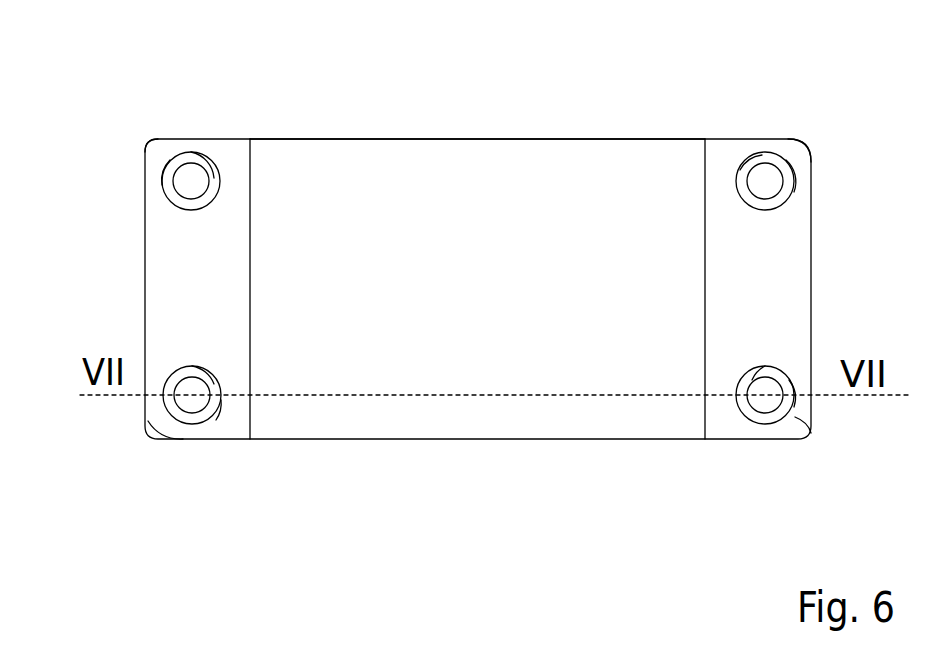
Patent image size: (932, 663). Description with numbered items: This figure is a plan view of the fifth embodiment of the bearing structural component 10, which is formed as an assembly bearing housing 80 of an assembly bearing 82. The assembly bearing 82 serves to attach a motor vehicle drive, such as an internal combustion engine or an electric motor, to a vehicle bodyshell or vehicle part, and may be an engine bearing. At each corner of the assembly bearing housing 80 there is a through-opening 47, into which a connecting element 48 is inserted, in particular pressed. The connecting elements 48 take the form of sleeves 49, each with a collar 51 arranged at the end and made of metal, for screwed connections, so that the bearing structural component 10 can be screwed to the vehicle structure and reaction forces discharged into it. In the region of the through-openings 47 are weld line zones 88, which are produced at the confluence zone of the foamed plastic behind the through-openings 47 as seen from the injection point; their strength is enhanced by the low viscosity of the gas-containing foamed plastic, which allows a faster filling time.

The bearing structural component 10 is at (373, 108).
The assembly bearing housing 80 is at (475, 113).
The assembly bearing 82 is at (582, 108).
The through-opening 47 is at (198, 153).
The connecting element 48 is at (150, 185).
The sleeve 49 is at (173, 195).
The collar 51 is at (214, 178).
The weld line zone 88 is at (157, 148).